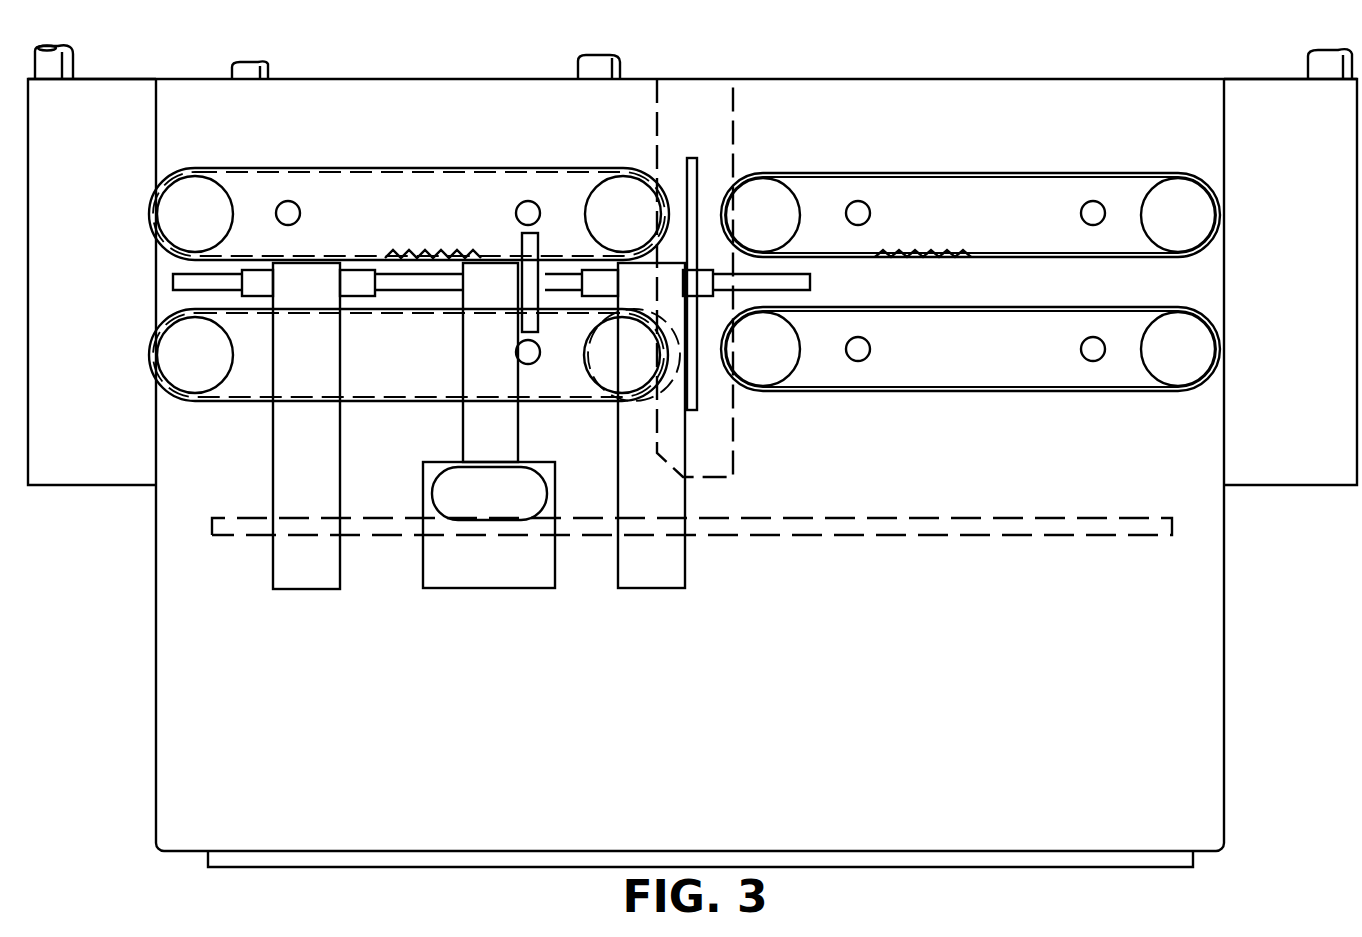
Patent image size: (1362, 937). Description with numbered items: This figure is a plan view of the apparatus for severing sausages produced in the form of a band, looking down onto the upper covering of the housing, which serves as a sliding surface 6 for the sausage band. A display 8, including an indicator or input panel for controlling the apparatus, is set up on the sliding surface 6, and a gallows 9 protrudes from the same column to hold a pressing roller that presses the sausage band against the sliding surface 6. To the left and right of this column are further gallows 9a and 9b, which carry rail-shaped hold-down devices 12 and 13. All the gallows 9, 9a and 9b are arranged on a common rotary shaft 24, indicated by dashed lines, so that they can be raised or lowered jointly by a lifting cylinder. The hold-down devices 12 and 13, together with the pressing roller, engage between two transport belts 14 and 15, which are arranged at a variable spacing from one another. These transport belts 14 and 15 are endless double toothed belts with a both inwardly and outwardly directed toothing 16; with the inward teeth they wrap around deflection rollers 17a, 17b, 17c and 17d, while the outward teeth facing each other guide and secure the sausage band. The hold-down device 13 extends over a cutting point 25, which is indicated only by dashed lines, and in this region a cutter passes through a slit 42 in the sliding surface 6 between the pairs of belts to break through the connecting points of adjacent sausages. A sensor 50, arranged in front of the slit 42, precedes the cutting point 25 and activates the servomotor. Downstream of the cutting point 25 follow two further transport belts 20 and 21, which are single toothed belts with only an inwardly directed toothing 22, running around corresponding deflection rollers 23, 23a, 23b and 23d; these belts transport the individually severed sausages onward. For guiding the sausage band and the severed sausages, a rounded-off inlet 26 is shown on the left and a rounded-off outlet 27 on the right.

The sliding surface 6 is at (853, 668).
The display 8 is at (490, 576).
The gallows 9 is at (466, 425).
The gallows 9a is at (288, 487).
The gallows 9b is at (670, 496).
The hold-down device 12 is at (173, 283).
The hold-down device 13 is at (810, 283).
The transport belt 14 is at (430, 170).
The transport belt 15 is at (370, 399).
The toothing 16 is at (408, 255).
The deflection roller 17a is at (203, 195).
The deflection roller 17b is at (628, 192).
The deflection roller 17c is at (196, 376).
The deflection roller 17d is at (612, 376).
The transport belt 20 is at (955, 174).
The transport belt 21 is at (1005, 393).
The toothing 22 is at (935, 256).
The deflection roller 23 is at (770, 371).
The deflection roller 23a is at (775, 206).
The deflection roller 23b is at (1181, 199).
The deflection roller 23d is at (1175, 379).
The rotary shaft 24 is at (820, 536).
The cutting point 25 is at (735, 122).
The inlet 26 is at (113, 472).
The outlet 27 is at (1290, 466).
The slit 42 is at (692, 160).
The sensor 50 is at (521, 240).